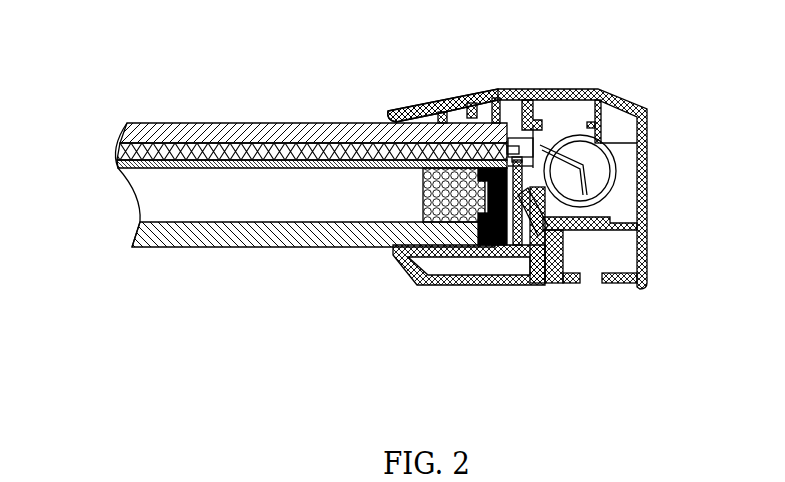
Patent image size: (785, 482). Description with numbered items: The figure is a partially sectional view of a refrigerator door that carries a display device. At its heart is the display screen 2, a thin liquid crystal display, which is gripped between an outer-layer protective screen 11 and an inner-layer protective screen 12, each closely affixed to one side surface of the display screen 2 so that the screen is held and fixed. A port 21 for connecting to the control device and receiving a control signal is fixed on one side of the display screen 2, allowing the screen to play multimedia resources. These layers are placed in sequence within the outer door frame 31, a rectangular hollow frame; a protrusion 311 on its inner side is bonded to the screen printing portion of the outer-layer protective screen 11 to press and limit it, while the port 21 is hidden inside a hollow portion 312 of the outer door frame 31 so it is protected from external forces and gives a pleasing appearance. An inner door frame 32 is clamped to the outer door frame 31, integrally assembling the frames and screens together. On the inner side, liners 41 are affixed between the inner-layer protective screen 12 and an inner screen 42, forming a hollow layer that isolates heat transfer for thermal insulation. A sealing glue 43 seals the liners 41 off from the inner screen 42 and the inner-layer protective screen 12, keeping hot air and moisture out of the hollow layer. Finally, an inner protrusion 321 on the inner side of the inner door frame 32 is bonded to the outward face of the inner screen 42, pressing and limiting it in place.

The outer-layer protective screen 11 is at (148, 127).
The display screen 2 is at (133, 143).
The inner-layer protective screen 12 is at (120, 165).
The inner screen 42 is at (140, 228).
The sealing glue 43 is at (450, 190).
The liner 41 is at (395, 248).
The outer door frame 31 is at (533, 149).
The protrusion 311 is at (447, 105).
The hollow portion 312 is at (565, 128).
The port 21 is at (590, 170).
The inner door frame 32 is at (587, 255).
The inner protrusion 321 is at (500, 280).